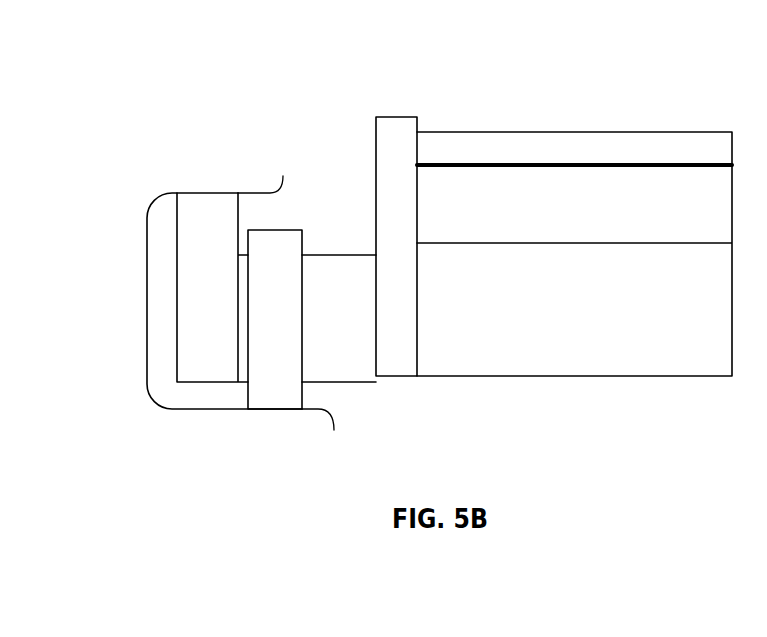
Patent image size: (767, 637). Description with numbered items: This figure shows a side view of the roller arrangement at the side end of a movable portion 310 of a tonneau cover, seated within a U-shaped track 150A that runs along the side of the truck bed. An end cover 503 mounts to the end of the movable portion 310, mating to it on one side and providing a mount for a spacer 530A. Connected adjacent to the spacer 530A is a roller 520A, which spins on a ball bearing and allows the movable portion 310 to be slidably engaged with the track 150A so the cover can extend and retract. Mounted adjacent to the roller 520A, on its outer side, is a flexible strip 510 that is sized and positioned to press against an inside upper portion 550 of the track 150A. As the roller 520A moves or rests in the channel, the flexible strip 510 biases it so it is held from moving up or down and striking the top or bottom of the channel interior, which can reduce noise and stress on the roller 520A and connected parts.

The track 150A is at (147, 360).
The movable portion 310 is at (553, 142).
The end cover 503 is at (398, 125).
The flexible strip 510 is at (198, 378).
The roller 520A is at (285, 228).
The spacer 530A is at (355, 372).
The inside upper portion 550 is at (153, 203).